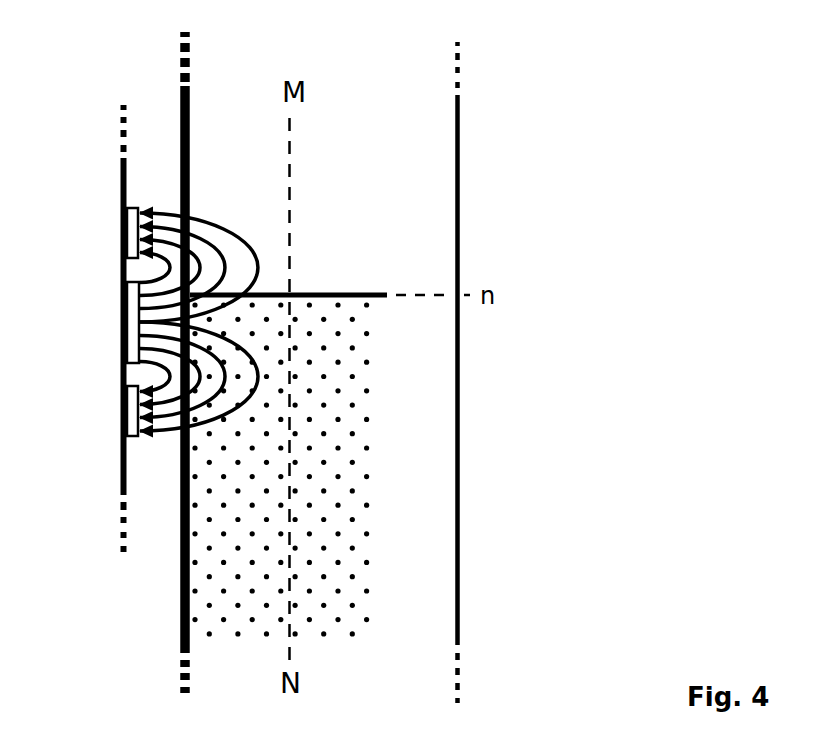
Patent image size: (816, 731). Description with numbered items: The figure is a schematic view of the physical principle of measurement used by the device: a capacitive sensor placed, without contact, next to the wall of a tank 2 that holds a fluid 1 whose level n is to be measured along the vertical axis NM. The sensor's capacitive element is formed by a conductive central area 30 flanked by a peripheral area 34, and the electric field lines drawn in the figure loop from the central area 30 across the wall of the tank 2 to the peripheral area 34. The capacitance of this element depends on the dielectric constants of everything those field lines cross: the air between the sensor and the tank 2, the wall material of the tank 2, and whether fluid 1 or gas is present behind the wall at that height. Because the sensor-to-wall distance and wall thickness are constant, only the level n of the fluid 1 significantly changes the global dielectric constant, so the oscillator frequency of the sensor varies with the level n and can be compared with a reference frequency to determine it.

The fluid 1 is at (358, 335).
The tank 2 is at (195, 572).
The conductive central area 30 is at (123, 322).
The peripheral area 34 is at (123, 237).